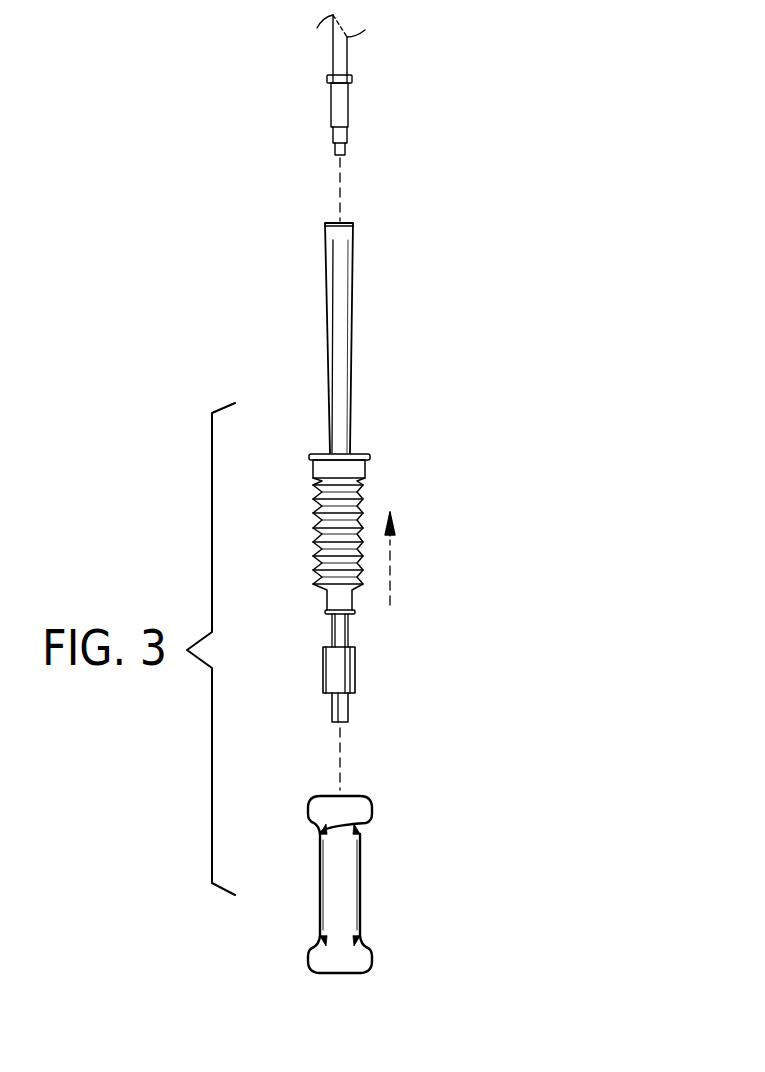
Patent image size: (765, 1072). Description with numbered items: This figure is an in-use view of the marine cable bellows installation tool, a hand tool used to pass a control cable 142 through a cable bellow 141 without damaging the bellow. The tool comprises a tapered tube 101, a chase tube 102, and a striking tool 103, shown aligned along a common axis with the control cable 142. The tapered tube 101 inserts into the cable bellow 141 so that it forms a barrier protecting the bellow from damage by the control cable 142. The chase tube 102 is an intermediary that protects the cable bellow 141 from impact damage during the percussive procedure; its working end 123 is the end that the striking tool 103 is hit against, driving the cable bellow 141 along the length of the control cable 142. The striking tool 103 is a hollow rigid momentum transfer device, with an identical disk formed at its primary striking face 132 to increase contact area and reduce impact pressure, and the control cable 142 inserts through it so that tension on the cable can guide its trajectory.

The control cable 142 is at (350, 55).
The tapered tube 101 is at (342, 355).
The cable bellow 141 is at (363, 485).
The chase tube 102 is at (347, 664).
The working end 123 is at (348, 695).
The primary striking face 132 is at (350, 797).
The striking tool 103 is at (399, 867).